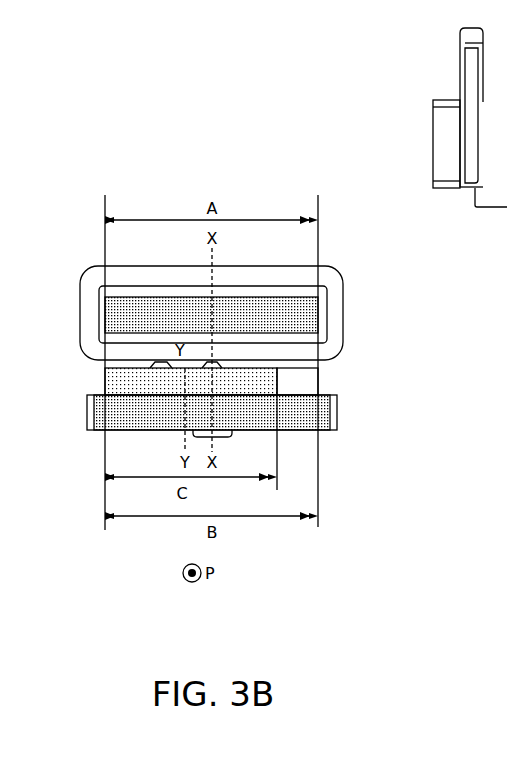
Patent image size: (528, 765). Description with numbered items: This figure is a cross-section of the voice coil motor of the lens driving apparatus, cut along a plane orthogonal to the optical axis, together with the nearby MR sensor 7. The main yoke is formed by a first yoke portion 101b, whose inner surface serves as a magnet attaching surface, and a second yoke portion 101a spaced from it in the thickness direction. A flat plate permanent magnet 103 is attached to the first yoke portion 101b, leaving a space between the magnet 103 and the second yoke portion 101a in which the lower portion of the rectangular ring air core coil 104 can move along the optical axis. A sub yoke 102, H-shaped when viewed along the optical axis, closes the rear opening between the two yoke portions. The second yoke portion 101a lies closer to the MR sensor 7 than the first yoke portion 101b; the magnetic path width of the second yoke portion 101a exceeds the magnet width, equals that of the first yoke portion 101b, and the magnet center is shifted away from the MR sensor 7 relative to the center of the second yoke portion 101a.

The MR sensor 7 is at (437, 128).
The second yoke portion 101a is at (298, 312).
The first yoke portion 101b is at (335, 422).
The sub yoke 102 is at (298, 376).
The permanent magnet 103 is at (118, 388).
The air core coil 104 is at (90, 283).